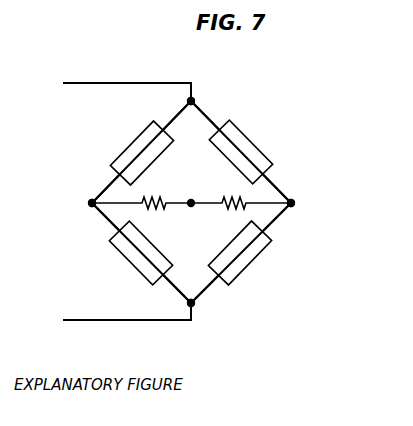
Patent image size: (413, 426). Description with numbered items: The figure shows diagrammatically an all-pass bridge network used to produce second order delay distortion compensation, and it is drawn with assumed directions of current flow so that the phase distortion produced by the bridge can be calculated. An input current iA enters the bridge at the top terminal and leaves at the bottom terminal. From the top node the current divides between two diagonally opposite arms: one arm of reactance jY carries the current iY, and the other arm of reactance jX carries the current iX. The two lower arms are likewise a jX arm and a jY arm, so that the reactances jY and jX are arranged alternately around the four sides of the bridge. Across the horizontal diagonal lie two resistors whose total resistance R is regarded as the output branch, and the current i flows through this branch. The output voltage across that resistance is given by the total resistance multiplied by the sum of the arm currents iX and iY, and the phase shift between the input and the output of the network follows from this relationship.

The reactance arm jY is at (190, 203).
The reactance arm jX is at (190, 202).
The input current iA is at (141, 73).
The current in the jX arm iX is at (245, 120).
The current in the jY arm iY is at (269, 268).
The output branch current i is at (213, 220).